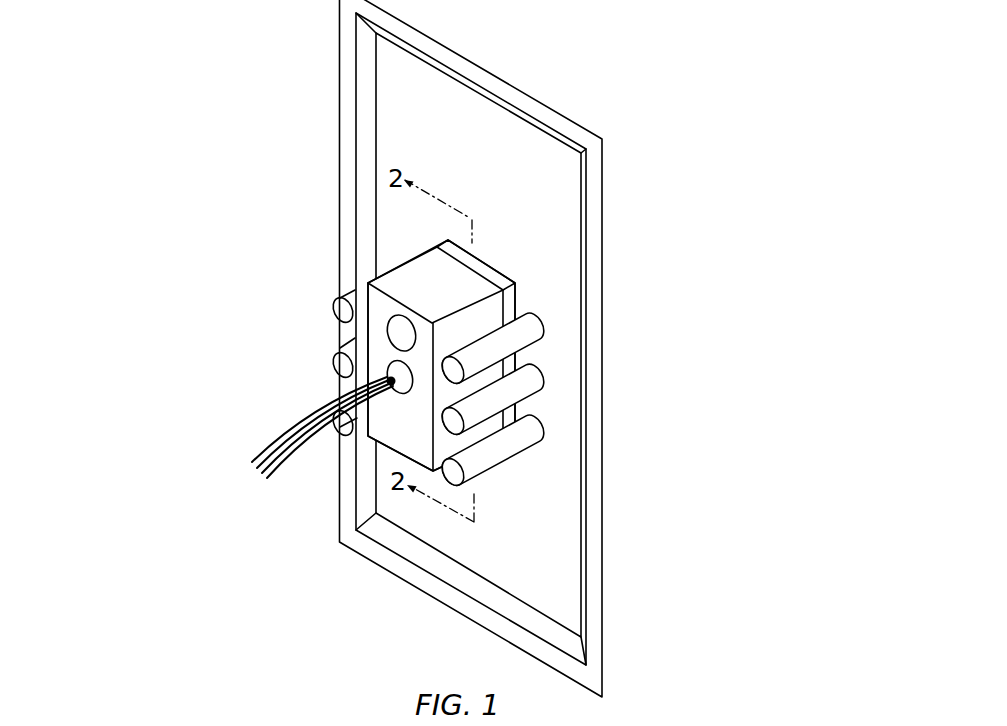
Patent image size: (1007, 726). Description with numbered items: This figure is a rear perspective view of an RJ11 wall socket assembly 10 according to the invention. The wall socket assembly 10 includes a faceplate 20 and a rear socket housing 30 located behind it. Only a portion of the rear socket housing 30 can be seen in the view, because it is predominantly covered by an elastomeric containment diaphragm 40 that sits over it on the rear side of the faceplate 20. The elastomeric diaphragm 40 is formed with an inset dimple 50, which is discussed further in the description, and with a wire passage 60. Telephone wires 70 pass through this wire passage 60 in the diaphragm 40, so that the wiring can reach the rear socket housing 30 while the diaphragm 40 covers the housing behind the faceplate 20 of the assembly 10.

The wall socket assembly 10 is at (638, 117).
The faceplate 20 is at (603, 237).
The rear socket housing 30 is at (518, 305).
The elastomeric containment diaphragm 40 is at (413, 278).
The inset dimple 50 is at (390, 323).
The wire passage 60 is at (390, 370).
The telephone wires 70 is at (282, 437).